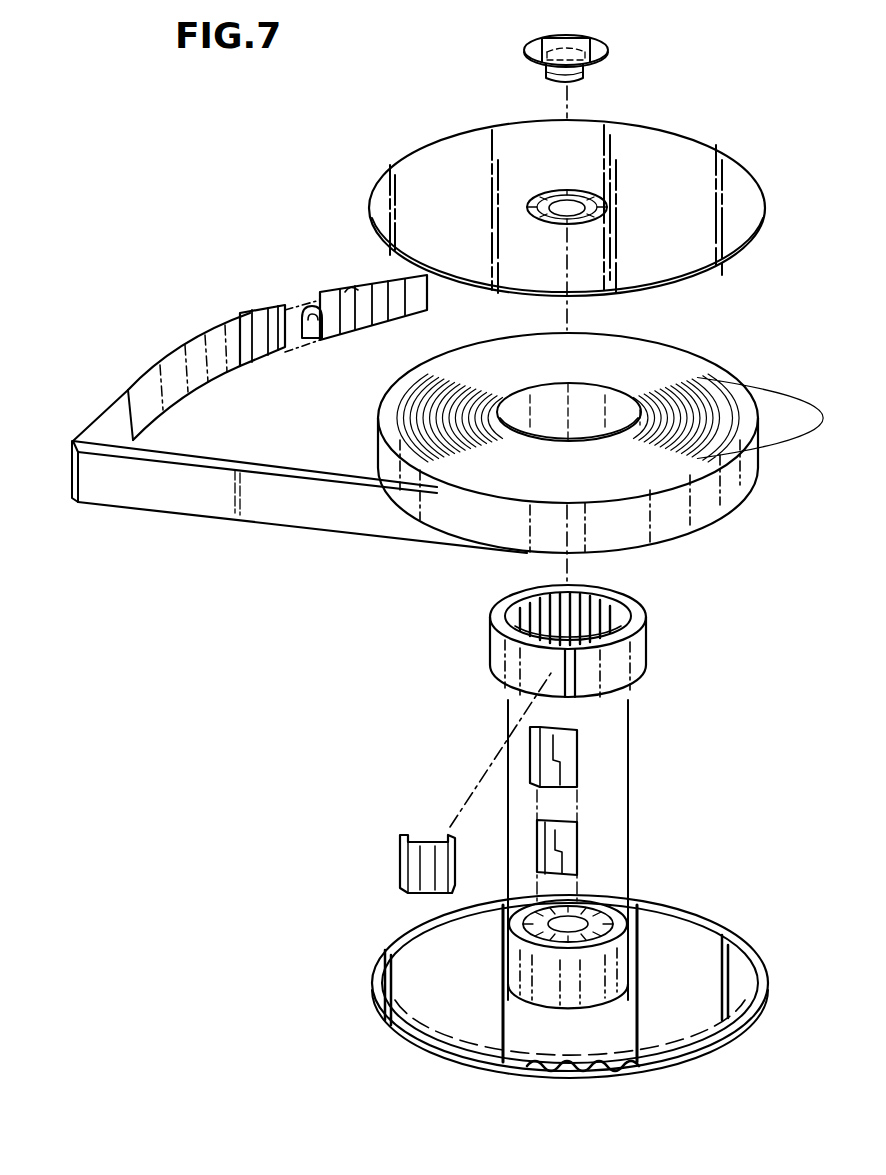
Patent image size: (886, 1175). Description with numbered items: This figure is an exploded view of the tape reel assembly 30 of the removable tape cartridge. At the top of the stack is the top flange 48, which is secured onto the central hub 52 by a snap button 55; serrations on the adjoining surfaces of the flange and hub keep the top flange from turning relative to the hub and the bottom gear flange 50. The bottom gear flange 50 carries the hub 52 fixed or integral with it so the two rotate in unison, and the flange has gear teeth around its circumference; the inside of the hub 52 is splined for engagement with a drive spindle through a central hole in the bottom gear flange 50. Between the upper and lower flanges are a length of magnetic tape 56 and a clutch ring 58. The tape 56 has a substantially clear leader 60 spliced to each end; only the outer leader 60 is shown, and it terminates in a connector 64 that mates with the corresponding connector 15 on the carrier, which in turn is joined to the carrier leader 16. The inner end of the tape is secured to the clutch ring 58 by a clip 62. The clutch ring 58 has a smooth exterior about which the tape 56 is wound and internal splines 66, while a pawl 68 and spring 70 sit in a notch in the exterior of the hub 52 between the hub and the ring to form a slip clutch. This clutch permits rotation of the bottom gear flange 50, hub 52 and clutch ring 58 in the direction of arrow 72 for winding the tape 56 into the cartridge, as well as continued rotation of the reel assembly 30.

The connector 15 is at (352, 294).
The leader 16 is at (405, 312).
The tape reel assembly 30 is at (297, 242).
The top flange 48 is at (673, 160).
The bottom gear flange 50 is at (678, 995).
The central hub 52 is at (612, 965).
The snap button 55 is at (575, 42).
The magnetic tape 56 is at (215, 495).
The clutch ring 58 is at (620, 665).
The leader 60 is at (175, 377).
The clip 62 is at (425, 866).
The connector 64 is at (253, 310).
The splines 66 is at (520, 607).
The pawl 68 is at (560, 770).
The spring 70 is at (555, 845).
The arrow 72 is at (460, 1118).